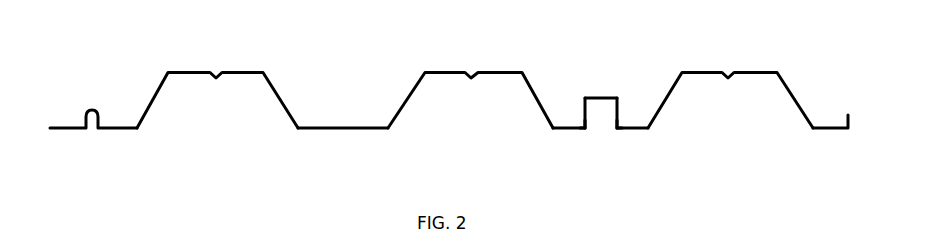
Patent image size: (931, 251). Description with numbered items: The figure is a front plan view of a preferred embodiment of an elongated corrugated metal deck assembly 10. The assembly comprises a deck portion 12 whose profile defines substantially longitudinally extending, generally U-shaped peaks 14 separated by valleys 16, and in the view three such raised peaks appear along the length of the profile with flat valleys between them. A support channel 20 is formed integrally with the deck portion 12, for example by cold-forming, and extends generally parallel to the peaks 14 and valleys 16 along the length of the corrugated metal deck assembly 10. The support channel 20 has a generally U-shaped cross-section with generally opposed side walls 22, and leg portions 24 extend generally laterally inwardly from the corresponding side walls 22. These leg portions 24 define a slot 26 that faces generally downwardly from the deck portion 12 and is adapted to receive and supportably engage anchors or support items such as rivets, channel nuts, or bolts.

The corrugated metal deck assembly 10 is at (449, 101).
The deck portion 12 is at (675, 82).
The peaks 14 is at (168, 97).
The valleys 16 is at (663, 82).
The support channel 20 is at (587, 127).
The side walls 22 is at (616, 103).
The leg portions 24 is at (613, 132).
The slot 26 is at (603, 119).